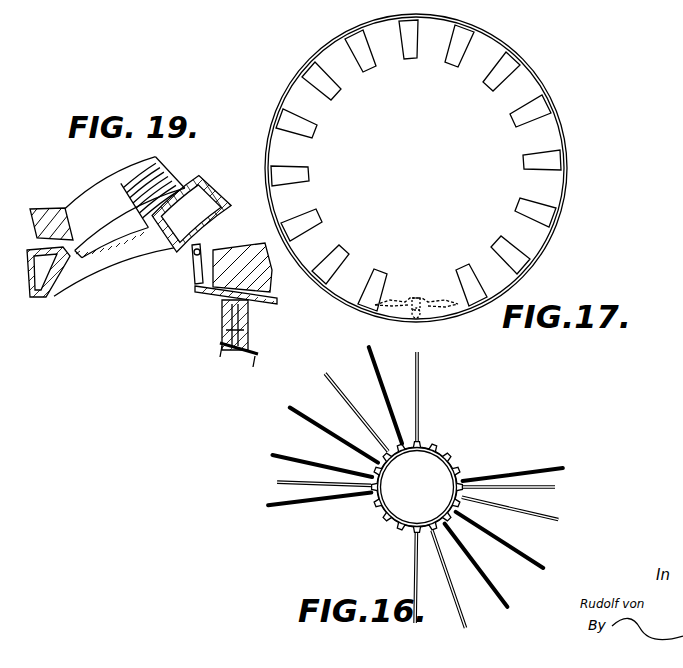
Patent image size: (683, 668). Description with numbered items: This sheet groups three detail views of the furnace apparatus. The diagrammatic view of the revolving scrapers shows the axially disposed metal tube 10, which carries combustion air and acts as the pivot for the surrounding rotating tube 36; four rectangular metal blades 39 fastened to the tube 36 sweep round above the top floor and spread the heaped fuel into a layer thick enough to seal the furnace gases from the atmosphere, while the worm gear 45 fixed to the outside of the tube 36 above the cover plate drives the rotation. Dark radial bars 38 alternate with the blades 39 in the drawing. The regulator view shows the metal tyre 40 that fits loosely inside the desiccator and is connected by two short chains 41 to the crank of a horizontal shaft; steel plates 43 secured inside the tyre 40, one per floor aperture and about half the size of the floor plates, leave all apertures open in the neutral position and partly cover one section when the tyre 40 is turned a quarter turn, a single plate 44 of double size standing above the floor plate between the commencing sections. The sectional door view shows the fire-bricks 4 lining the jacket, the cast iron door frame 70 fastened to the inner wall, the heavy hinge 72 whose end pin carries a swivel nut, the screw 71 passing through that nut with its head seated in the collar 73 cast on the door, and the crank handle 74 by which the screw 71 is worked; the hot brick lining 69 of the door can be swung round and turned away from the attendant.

In FIG. 19, the fire-bricks 4 is at (48, 212).
In FIG. 16, the axially disposed metal tube 10 is at (386, 478).
In FIG. 16, the rotating tube 36 is at (443, 452).
In FIG. 16, the magnet bars 38 is at (273, 455).
In FIG. 16, the rectangular shaped metal blades 39 is at (423, 381).
In FIG. 17, the metal tyre 40 is at (537, 84).
In FIG. 17, the chains 41 is at (432, 300).
In FIG. 17, the steel plates 43 is at (463, 44).
In FIG. 17, the double-size plate 44 is at (542, 171).
In FIG. 16, the worm gear 45 is at (378, 512).
In FIG. 19, the brick lining 69 is at (238, 262).
In FIG. 19, the door frame 70 is at (62, 298).
In FIG. 19, the screw 71 is at (246, 325).
In FIG. 19, the hinge 72 is at (195, 268).
In FIG. 19, the collar 73 is at (208, 302).
In FIG. 19, the crank handle 74 is at (250, 352).